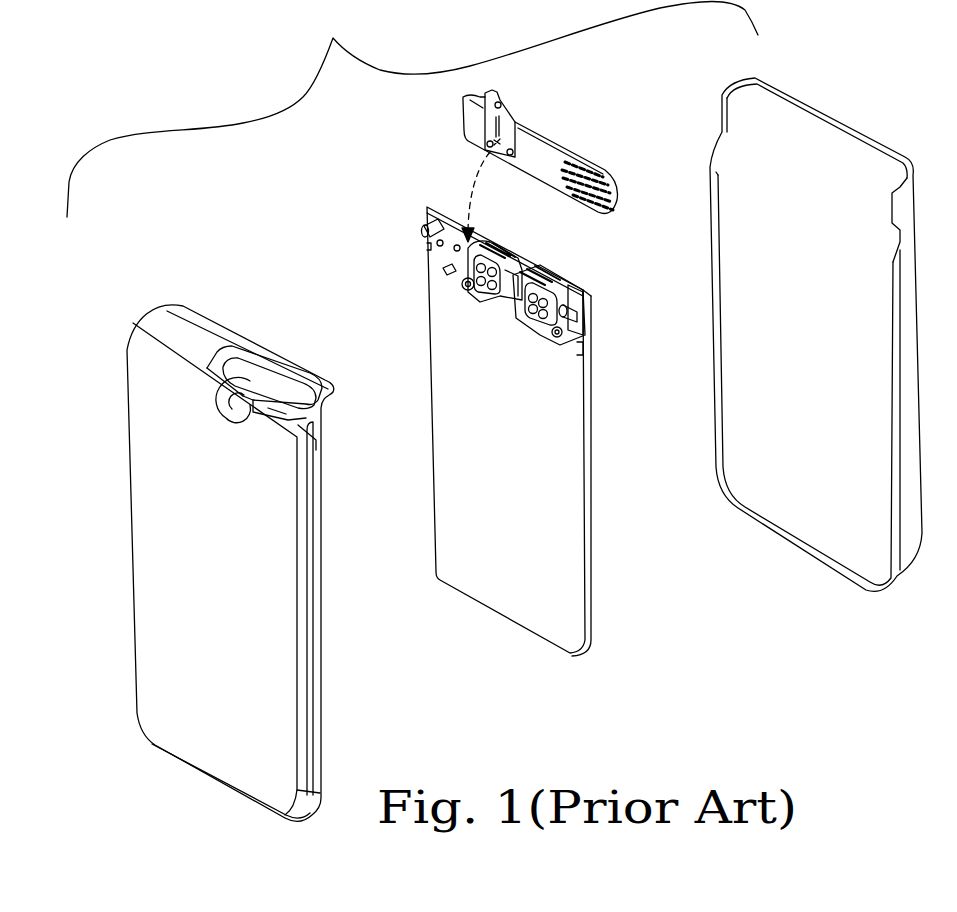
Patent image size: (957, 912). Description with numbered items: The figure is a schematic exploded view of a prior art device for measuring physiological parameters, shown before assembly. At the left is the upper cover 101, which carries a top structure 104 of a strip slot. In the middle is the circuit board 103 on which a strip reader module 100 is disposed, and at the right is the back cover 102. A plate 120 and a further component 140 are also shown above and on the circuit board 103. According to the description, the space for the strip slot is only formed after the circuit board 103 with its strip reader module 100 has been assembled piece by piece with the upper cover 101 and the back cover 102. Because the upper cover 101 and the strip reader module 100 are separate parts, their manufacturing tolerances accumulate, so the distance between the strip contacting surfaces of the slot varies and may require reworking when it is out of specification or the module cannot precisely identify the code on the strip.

The strip reader module 100 is at (587, 300).
The upper cover 101 is at (163, 307).
The back cover 102 is at (780, 72).
The circuit board 103 is at (585, 425).
The top structure 104 is at (280, 427).
The cover plate 120 is at (547, 137).
The connector 140 is at (537, 252).